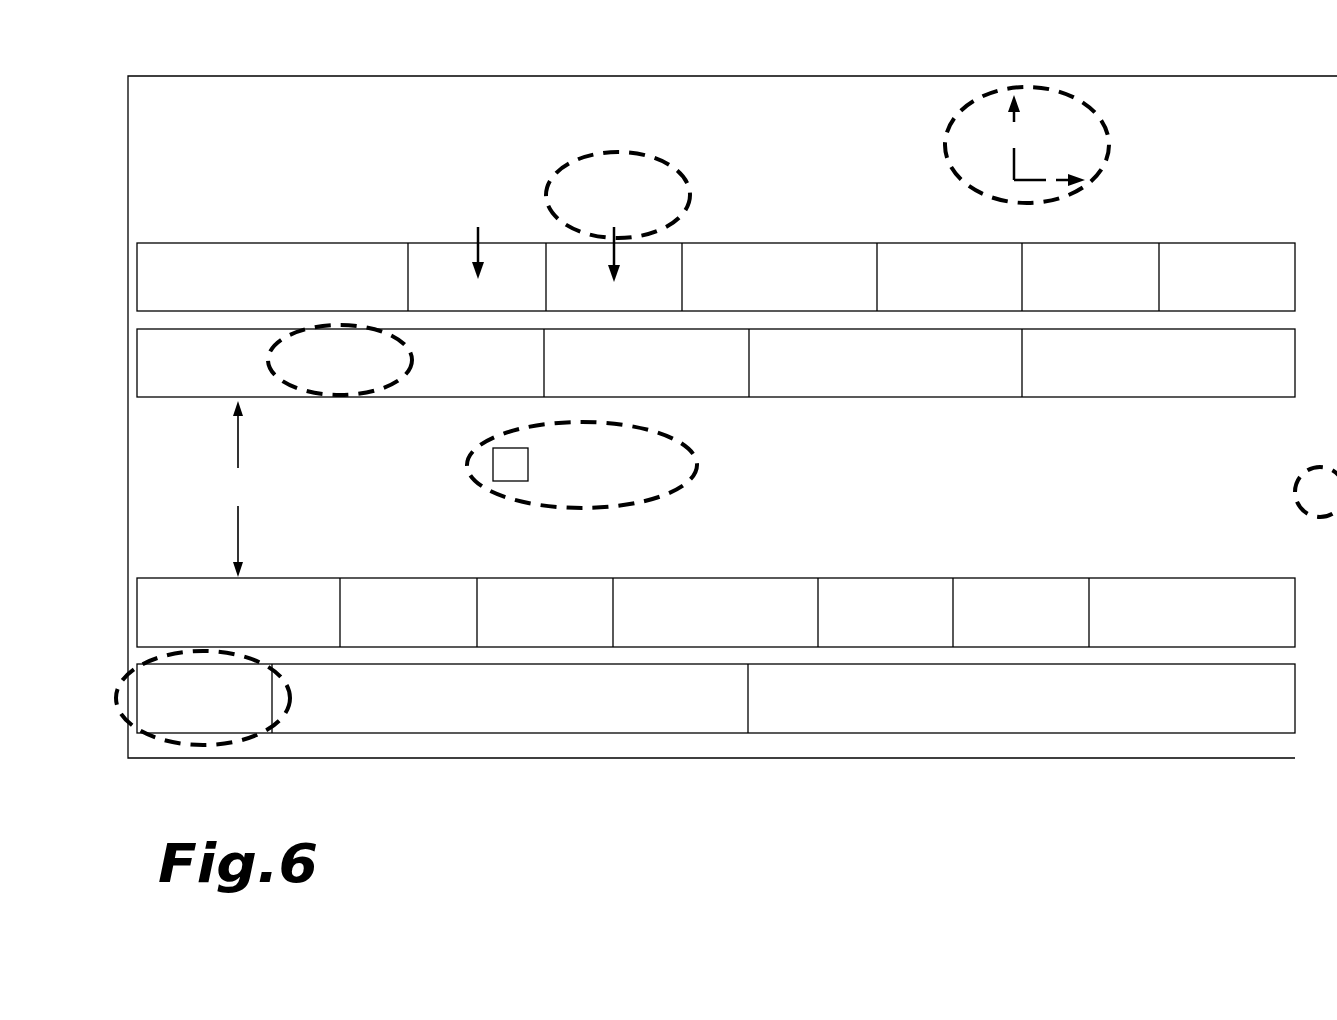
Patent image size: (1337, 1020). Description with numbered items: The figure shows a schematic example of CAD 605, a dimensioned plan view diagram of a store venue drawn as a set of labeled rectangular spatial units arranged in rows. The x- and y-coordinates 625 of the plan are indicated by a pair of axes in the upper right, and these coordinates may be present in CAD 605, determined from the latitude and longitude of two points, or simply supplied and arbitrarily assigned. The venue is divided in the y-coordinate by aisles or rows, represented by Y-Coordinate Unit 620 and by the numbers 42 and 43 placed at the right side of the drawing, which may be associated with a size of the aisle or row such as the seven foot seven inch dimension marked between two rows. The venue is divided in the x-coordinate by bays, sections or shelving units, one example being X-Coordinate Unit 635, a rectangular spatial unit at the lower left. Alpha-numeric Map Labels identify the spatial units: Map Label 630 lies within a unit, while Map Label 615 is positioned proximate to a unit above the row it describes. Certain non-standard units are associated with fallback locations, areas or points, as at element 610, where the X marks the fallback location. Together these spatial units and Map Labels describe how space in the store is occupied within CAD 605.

The CAD 605 is at (742, 76).
The element with fallback location 610 is at (697, 466).
The Map Label 615 is at (692, 200).
The Y-Coordinate Unit 620 is at (1295, 490).
The x- and y-coordinates 625 is at (1108, 150).
The Map Label 630 is at (411, 362).
The X-Coordinate Unit 635 is at (290, 703).
The number 42 is at (1320, 492).
The number 43 is at (1320, 145).